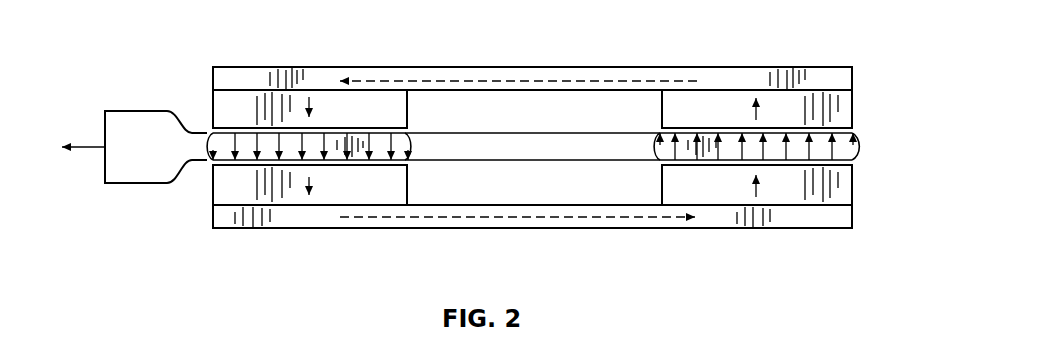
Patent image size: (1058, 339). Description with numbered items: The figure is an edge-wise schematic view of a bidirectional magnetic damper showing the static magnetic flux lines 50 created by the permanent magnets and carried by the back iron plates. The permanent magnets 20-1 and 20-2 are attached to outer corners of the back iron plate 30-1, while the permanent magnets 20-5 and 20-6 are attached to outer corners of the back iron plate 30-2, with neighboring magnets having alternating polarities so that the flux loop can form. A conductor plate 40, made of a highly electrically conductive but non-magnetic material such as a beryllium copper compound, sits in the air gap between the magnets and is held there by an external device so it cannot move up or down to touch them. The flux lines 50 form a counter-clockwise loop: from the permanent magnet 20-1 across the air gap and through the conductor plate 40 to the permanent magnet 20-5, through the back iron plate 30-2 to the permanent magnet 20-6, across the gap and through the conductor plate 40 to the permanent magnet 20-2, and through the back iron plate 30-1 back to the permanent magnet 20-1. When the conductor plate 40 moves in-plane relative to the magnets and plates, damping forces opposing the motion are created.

The permanent magnet 20-1 is at (215, 100).
The permanent magnet 20-2 is at (838, 118).
The permanent magnet 20-5 is at (215, 198).
The permanent magnet 20-6 is at (838, 188).
The back iron plate 30-1 is at (745, 77).
The back iron plate 30-2 is at (777, 222).
The conductor plate 40 is at (128, 177).
The magnetic flux lines 50 is at (615, 80).